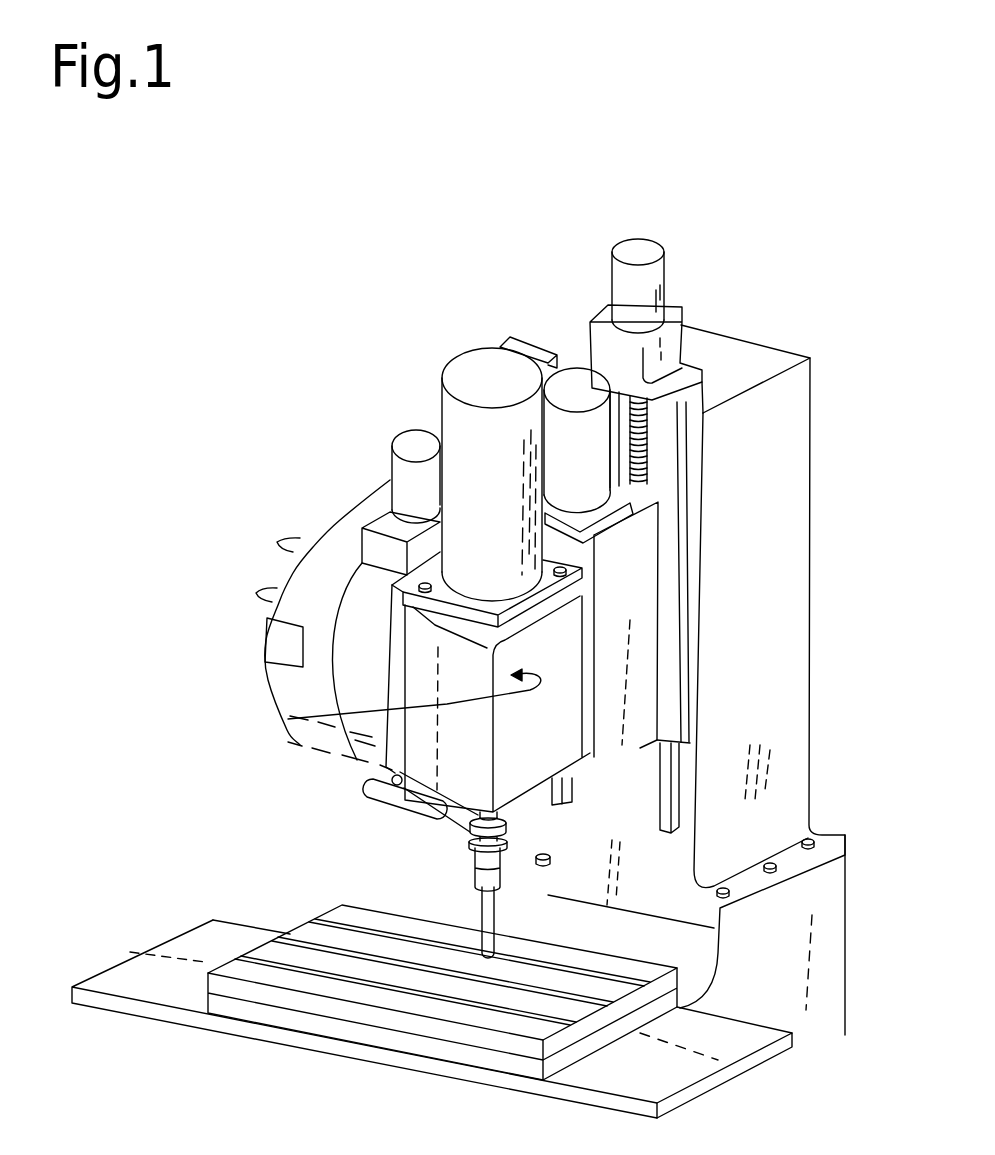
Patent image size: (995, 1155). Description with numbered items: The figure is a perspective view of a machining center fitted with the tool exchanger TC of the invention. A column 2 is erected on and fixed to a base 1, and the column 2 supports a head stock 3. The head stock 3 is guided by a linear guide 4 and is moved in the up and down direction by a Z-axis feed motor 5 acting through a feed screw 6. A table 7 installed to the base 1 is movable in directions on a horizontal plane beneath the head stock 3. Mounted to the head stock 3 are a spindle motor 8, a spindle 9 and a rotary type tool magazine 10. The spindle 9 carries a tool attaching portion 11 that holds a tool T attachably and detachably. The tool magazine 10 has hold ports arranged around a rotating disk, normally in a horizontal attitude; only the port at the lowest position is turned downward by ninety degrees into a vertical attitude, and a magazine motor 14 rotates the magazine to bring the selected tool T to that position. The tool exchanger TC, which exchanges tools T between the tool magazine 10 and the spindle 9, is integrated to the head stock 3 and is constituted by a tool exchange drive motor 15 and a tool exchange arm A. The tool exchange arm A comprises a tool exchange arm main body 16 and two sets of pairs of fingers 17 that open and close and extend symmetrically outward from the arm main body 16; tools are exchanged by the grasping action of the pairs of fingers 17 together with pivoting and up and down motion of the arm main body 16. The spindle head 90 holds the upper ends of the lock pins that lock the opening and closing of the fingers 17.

The base 1 is at (825, 950).
The column 2 is at (711, 338).
The head stock 3 is at (640, 665).
The linear guide 4 is at (677, 440).
The Z-axis feed motor 5 is at (643, 246).
The feed screw 6 is at (652, 405).
The table 7 is at (246, 977).
The spindle motor 8 is at (462, 412).
The spindle 9 is at (505, 812).
The rotary type tool magazine 10 is at (284, 680).
The tool attaching portion 11 is at (508, 820).
The magazine motor 14 is at (412, 487).
The tool exchange drive motor 15 is at (567, 457).
The tool exchange arm main body 16 is at (394, 806).
The pairs of fingers 17 is at (358, 768).
The spindle head 90 is at (522, 785).
The tool exchange arm A is at (358, 793).
The tool T is at (478, 870).
The tool exchanger TC is at (357, 762).